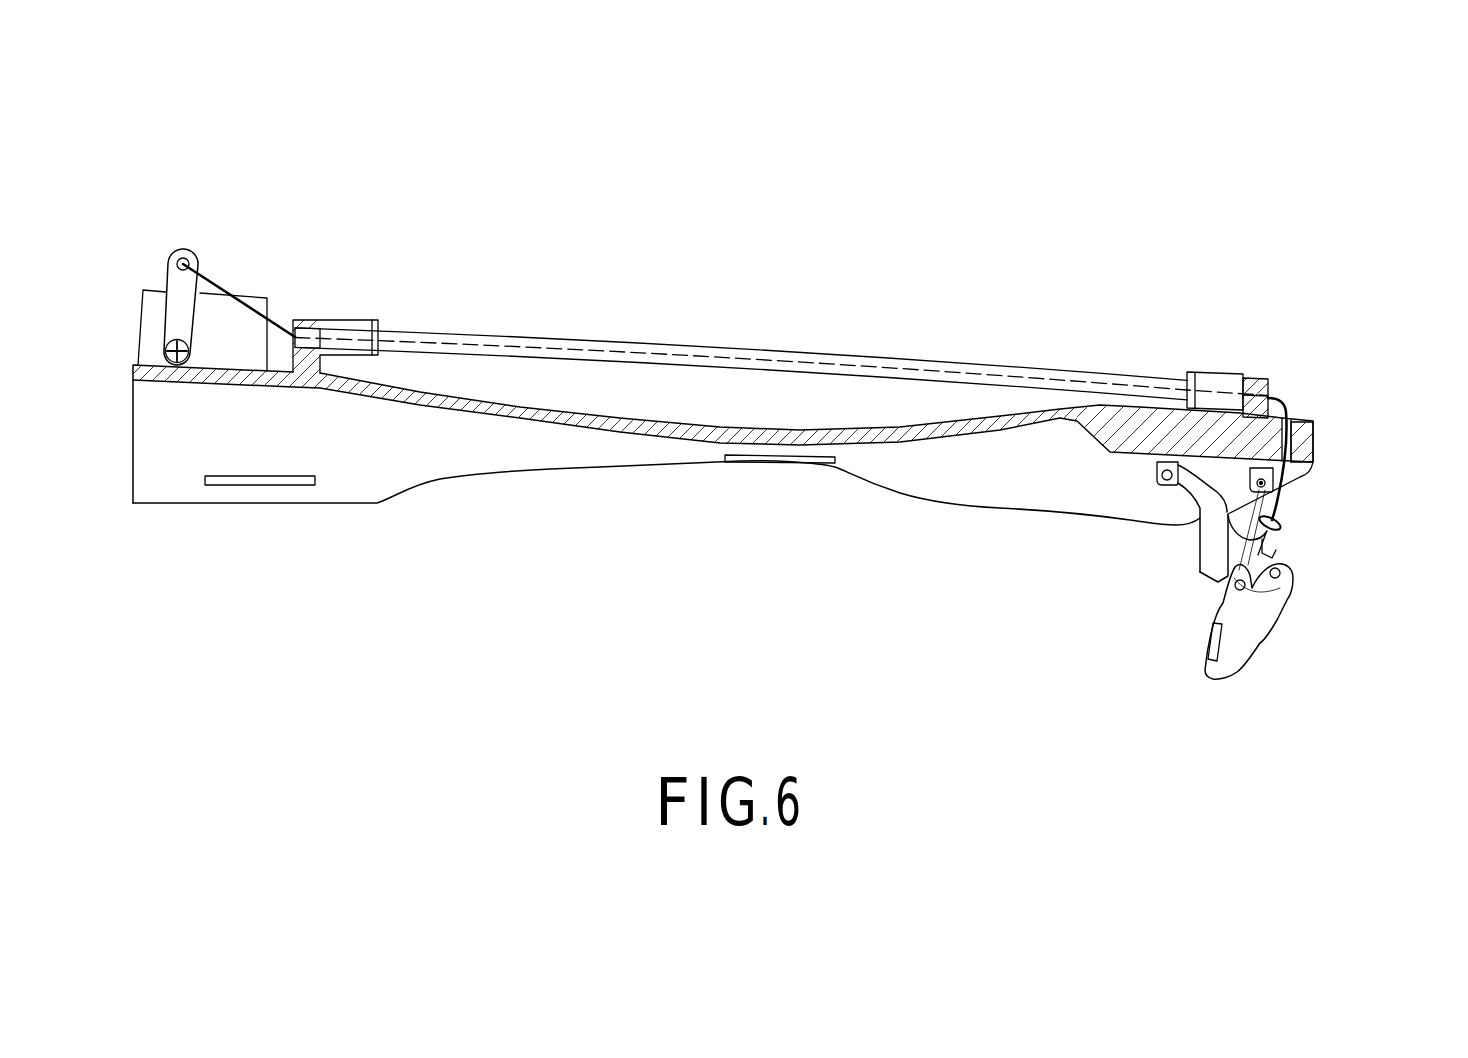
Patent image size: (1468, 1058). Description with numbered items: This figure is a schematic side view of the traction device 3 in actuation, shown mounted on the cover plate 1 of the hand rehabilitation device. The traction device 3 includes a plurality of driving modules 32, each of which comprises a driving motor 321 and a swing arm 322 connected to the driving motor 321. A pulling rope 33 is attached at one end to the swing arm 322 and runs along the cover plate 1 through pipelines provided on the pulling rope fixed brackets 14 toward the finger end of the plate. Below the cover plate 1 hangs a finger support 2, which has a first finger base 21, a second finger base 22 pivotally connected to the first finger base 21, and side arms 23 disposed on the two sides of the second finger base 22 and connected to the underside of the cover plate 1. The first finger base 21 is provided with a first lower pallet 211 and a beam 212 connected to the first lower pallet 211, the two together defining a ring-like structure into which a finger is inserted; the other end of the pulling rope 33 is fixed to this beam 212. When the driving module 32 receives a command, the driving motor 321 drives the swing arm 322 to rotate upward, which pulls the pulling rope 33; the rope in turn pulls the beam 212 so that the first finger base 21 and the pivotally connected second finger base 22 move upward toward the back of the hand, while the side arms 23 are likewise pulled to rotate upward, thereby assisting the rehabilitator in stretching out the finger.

The cover plate 1 is at (600, 505).
The finger support 2 is at (1243, 576).
The first finger base 21 is at (1155, 599).
The first lower pallet 211 is at (1215, 565).
The beam 212 is at (1282, 526).
The second finger base 22 is at (1232, 660).
The side arm 23 is at (1283, 503).
The traction device 3 is at (675, 224).
The driving module 32 is at (174, 209).
The driving motor 321 is at (145, 305).
The swing arm 322 is at (172, 280).
The pulling rope 33 is at (213, 283).
The pulling rope fixed bracket 14 is at (317, 320).